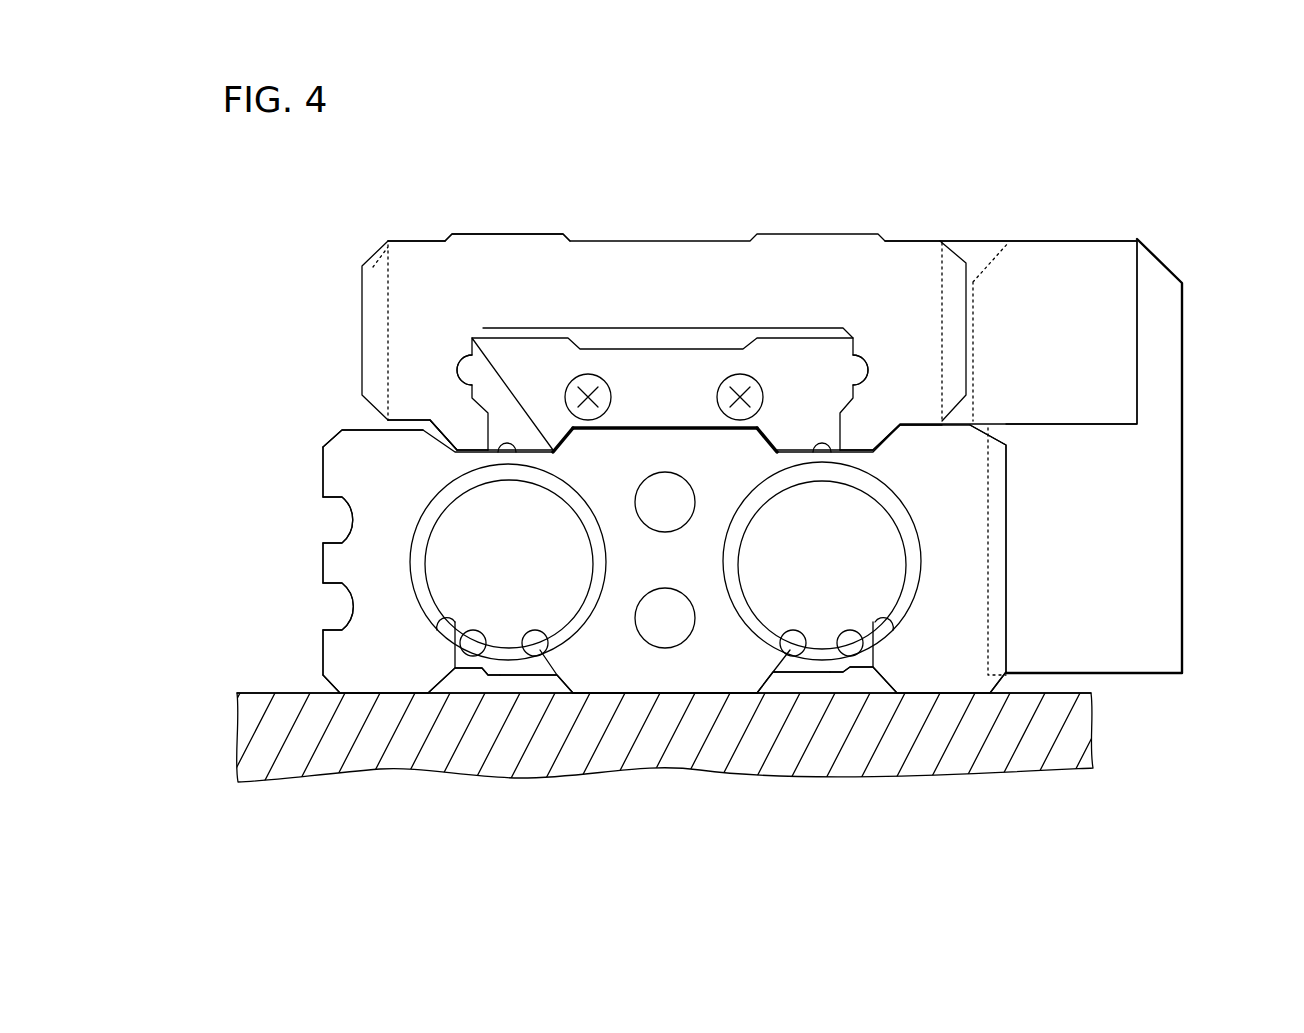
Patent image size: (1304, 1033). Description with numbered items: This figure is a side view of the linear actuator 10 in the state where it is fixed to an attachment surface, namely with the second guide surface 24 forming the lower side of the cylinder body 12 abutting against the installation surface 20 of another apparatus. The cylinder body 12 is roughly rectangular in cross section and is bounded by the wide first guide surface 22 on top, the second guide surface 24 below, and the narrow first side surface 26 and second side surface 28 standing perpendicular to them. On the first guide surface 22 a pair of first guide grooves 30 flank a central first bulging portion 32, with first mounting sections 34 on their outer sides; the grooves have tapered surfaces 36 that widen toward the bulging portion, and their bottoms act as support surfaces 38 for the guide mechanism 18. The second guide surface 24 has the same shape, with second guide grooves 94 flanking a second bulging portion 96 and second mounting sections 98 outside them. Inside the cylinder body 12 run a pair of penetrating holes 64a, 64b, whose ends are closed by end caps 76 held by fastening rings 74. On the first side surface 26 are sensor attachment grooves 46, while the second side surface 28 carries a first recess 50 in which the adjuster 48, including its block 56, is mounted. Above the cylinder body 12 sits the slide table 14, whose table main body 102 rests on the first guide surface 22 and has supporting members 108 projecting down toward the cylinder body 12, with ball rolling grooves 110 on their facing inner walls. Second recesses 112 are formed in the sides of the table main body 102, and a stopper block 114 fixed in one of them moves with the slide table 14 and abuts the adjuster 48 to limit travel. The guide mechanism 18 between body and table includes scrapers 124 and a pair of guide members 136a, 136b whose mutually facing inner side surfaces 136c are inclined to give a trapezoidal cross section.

The linear actuator 10 is at (1168, 137).
The cylinder body 12 is at (314, 438).
The slide table 14 is at (824, 212).
The guide mechanism 18 is at (664, 330).
The installation surface 20 is at (254, 690).
The first guide surface 22 is at (350, 421).
The second guide surface 24 is at (923, 700).
The first side surface 26 is at (313, 568).
The second side surface 28 is at (1012, 600).
The first guide grooves 30 is at (467, 447).
The first bulging portion 32 is at (664, 427).
The first mounting sections 34 is at (391, 441).
The tapered surfaces 36 is at (557, 443).
The support surfaces 38 is at (502, 441).
The sensor attachment grooves 46 is at (363, 512).
The adjuster 48 is at (1200, 322).
The first recess 50 is at (988, 651).
The block 56 is at (1182, 553).
The penetrating hole 64a is at (452, 674).
The penetrating hole 64b is at (873, 671).
The fastening rings 74 is at (550, 674).
The end caps 76 is at (592, 572).
The second guide grooves 94 is at (475, 673).
The second bulging portion 96 is at (632, 681).
The second mounting sections 98 is at (365, 688).
The table main body 102 is at (492, 242).
The supporting members 108 is at (372, 358).
The ball rolling grooves 110 is at (473, 374).
The second recesses 112 is at (369, 262).
The stopper block 114 is at (1083, 240).
The scrapers 124 is at (562, 348).
The guide member 136a is at (541, 438).
The guide member 136b is at (788, 438).
The inner side surfaces 136c is at (571, 441).